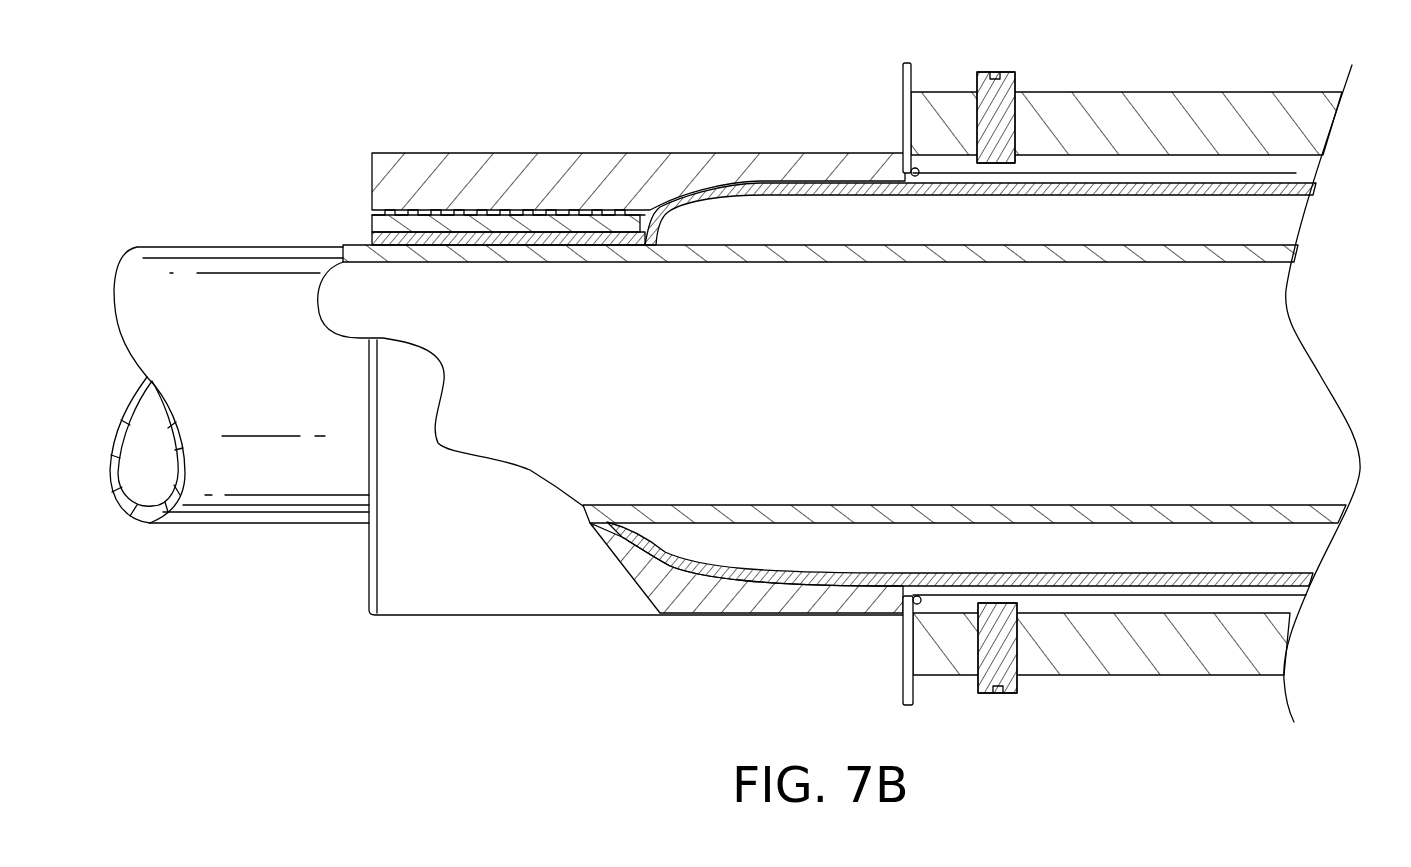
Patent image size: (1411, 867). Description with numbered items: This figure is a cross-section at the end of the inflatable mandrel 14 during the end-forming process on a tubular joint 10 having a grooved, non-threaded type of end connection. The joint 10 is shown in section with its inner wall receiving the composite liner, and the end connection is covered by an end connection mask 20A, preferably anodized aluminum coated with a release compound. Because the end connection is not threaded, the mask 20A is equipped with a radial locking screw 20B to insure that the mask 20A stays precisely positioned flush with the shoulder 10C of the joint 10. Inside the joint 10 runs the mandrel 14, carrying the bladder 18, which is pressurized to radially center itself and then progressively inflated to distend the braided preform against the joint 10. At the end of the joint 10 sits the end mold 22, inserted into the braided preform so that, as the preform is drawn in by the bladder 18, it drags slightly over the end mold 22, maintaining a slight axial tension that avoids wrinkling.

The tubular joint 10 is at (1310, 166).
The shoulder 10C is at (912, 188).
The mandrel 14 is at (860, 262).
The bladder 18 is at (828, 197).
The mask 20A is at (1122, 92).
The radial locking screw 20B is at (985, 72).
The end mold 22 is at (500, 153).